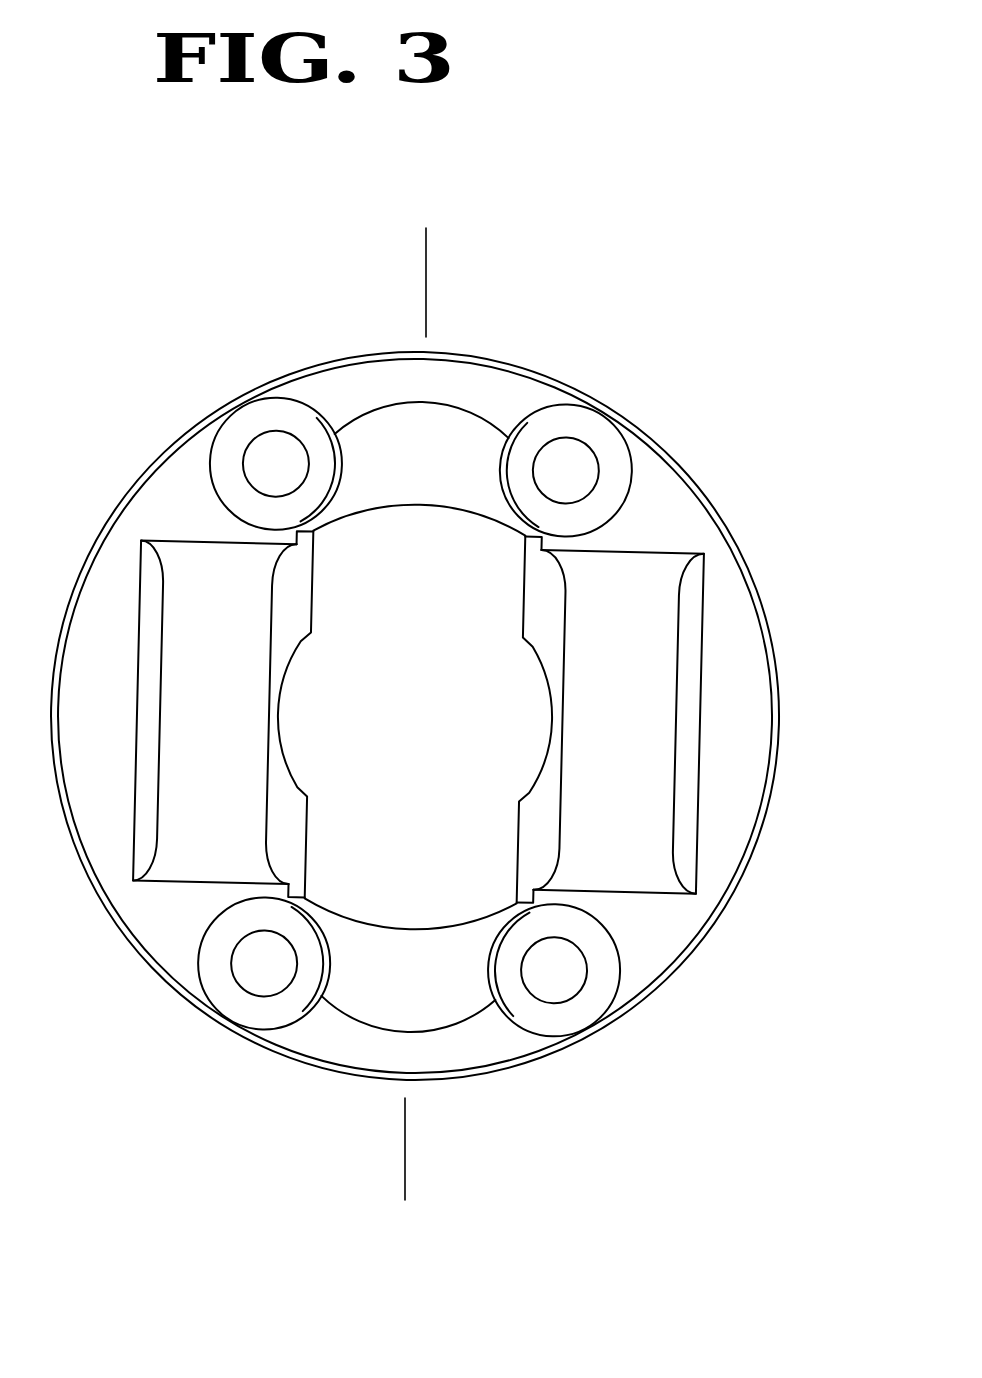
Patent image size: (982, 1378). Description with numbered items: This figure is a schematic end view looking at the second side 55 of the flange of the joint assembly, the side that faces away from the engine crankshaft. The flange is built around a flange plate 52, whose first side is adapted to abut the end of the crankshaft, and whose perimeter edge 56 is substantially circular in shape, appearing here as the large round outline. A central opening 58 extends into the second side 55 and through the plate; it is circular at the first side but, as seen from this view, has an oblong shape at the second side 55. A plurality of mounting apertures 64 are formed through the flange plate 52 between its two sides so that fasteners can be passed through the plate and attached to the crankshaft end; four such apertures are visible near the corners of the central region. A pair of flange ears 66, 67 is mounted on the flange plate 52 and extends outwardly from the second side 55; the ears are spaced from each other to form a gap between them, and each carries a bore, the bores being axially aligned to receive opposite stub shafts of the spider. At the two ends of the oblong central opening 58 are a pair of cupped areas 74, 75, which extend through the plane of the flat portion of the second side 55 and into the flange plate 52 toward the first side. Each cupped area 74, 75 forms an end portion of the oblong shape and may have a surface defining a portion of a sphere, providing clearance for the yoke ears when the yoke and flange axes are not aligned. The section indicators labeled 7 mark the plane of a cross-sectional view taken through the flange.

The flange plate 52 is at (617, 338).
The second side 55 is at (653, 507).
The perimeter edge 56 is at (708, 503).
The central opening 58 is at (380, 837).
The mounting apertures 64 is at (235, 483).
The flange ear 66 is at (213, 780).
The flange ear 67 is at (633, 733).
The cupped area 74 is at (413, 442).
The cupped area 75 is at (370, 977).
The section line 7- 7 is at (426, 228).